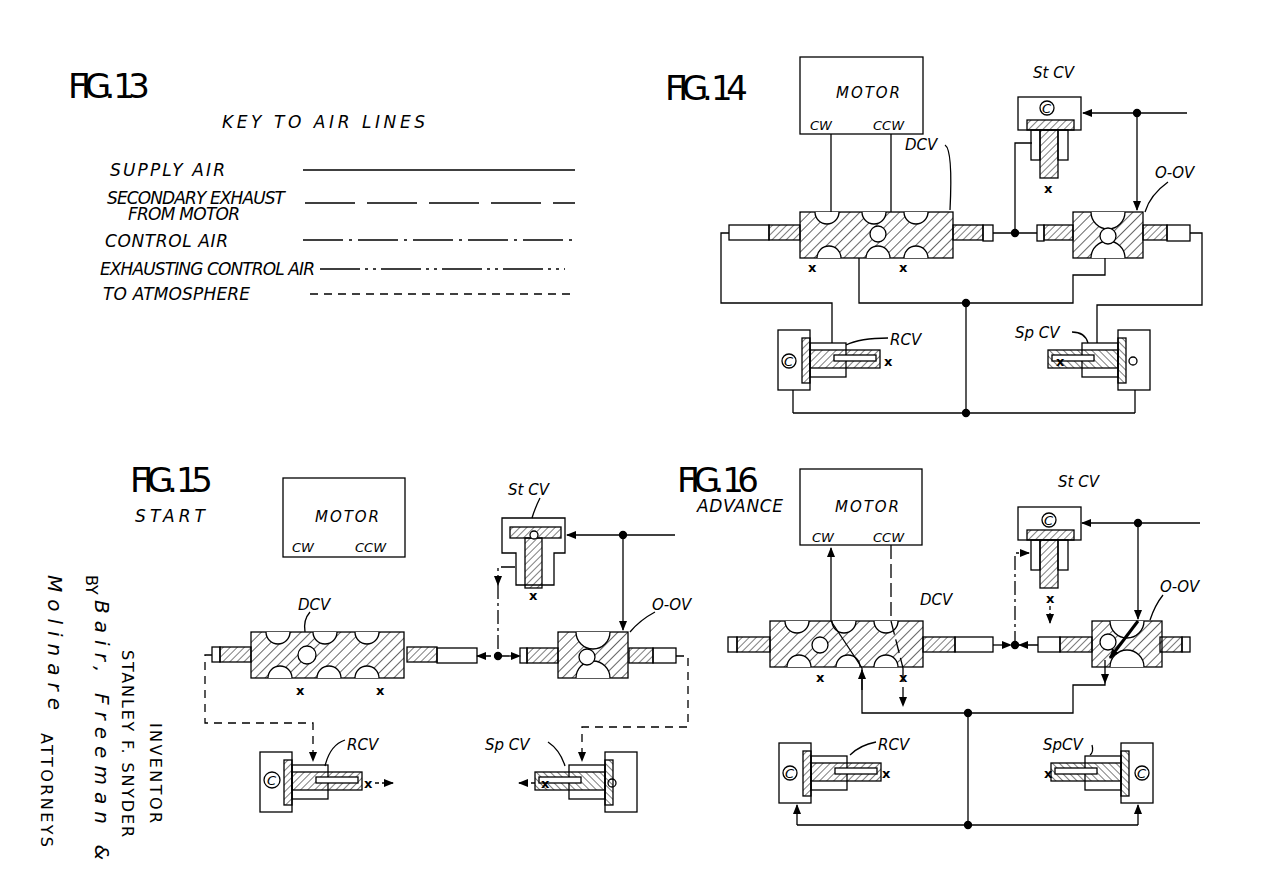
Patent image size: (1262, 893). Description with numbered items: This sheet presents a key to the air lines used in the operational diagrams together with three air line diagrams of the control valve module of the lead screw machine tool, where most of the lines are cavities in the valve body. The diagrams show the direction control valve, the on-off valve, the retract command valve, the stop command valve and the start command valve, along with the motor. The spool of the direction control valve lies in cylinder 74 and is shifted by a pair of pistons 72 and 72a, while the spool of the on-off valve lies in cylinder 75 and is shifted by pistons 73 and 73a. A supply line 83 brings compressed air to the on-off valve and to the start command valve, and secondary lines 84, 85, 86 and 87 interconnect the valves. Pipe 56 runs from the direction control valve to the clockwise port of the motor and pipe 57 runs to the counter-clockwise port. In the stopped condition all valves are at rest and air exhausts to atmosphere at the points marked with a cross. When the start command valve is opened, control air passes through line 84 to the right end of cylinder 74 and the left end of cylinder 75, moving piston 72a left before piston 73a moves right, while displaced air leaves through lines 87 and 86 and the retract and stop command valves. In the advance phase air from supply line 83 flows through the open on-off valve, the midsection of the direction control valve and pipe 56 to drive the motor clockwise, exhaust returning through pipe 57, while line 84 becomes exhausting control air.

In FIG. 14, the pipe 56 is at (831, 165).
In FIG. 16, the pipe 56 is at (828, 570).
In FIG. 14, the pipe 57 is at (893, 170).
In FIG. 16, the pipe 57 is at (893, 568).
In FIG. 14, the piston 72 is at (786, 224).
In FIG. 15, the piston 72 is at (234, 646).
In FIG. 16, the piston 72 is at (762, 605).
In FIG. 14, the piston 72a is at (973, 244).
In FIG. 15, the piston 72a is at (427, 617).
In FIG. 16, the piston 72a is at (946, 653).
In FIG. 14, the piston 73 is at (1061, 240).
In FIG. 15, the piston 73 is at (545, 622).
In FIG. 16, the piston 73 is at (1071, 653).
In FIG. 14, the piston 73a is at (1157, 226).
In FIG. 15, the piston 73a is at (650, 664).
In FIG. 16, the piston 73a is at (1172, 637).
In FIG. 14, the cylinder 74 is at (742, 224).
In FIG. 15, the cylinder 74 is at (216, 646).
In FIG. 16, the cylinder 74 is at (738, 655).
In FIG. 14, the cylinder 75 is at (1057, 218).
In FIG. 15, the cylinder 75 is at (667, 648).
In FIG. 16, the cylinder 75 is at (1057, 637).
In FIG. 14, the supply line 83 is at (1120, 118).
In FIG. 15, the supply line 83 is at (650, 540).
In FIG. 14, the secondary line 84 is at (1014, 170).
In FIG. 15, the secondary line 84 is at (498, 588).
In FIG. 16, the secondary line 84 is at (1014, 570).
In FIG. 14, the secondary line 85 is at (1025, 281).
In FIG. 16, the secondary line 85 is at (1020, 690).
In FIG. 14, the secondary line 86 is at (1197, 277).
In FIG. 15, the secondary line 86 is at (625, 722).
In FIG. 14, the secondary line 87 is at (728, 280).
In FIG. 15, the secondary line 87 is at (222, 723).